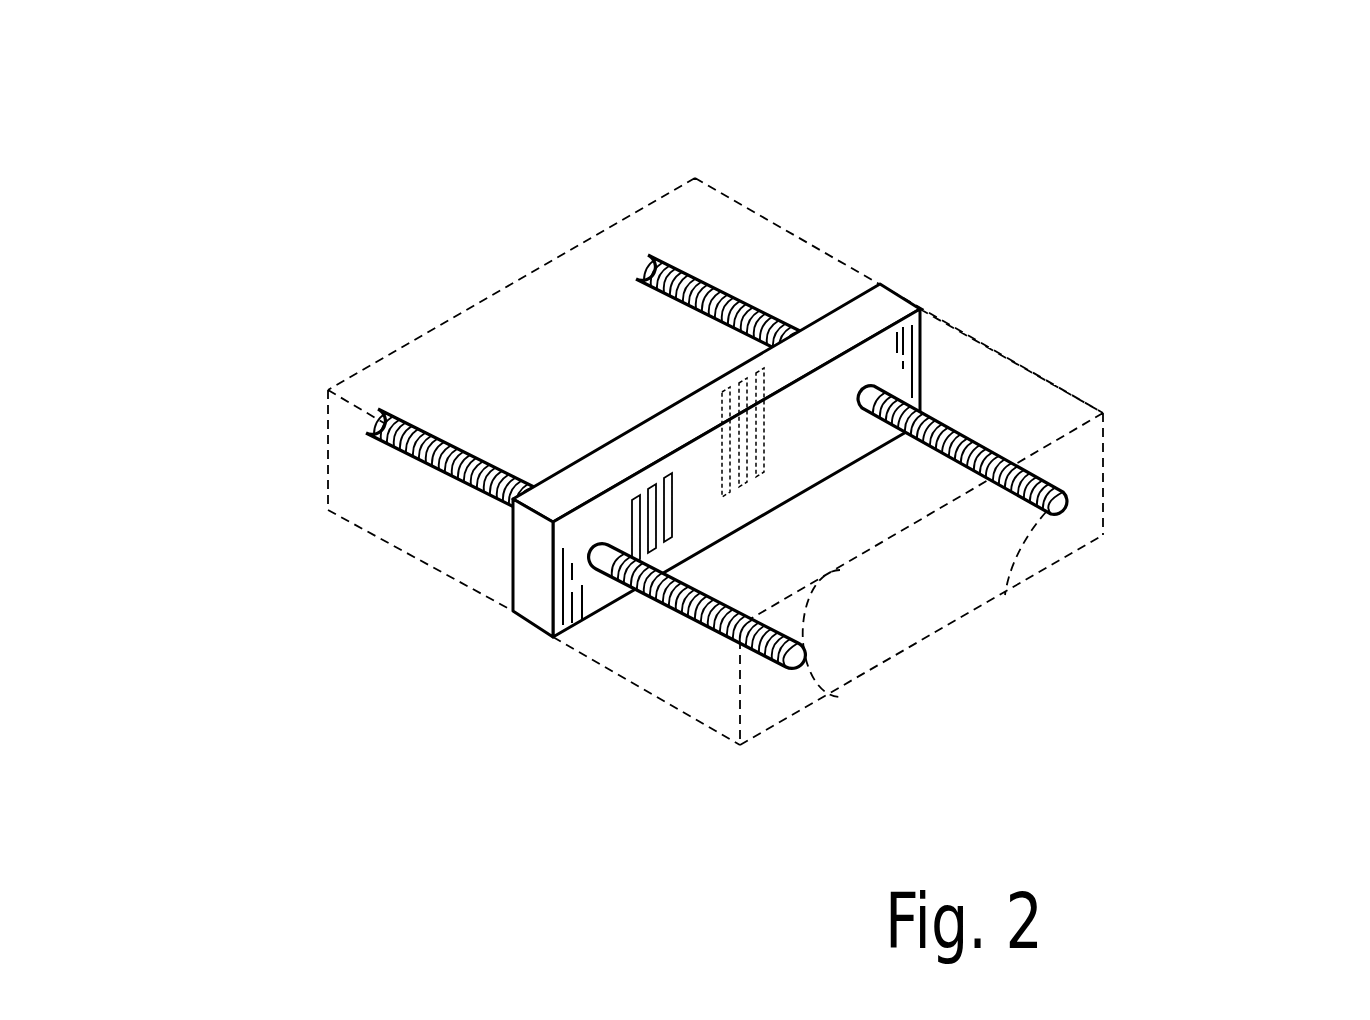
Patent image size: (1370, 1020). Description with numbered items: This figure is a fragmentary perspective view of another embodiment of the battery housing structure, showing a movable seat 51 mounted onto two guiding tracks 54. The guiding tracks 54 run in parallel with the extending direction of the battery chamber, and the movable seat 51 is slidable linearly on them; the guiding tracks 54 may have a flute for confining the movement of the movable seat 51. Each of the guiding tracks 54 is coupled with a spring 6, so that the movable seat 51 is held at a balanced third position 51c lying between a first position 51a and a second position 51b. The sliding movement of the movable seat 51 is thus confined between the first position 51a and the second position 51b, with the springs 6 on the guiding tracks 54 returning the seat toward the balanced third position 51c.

The movable seat 51 is at (589, 488).
The first position 51a is at (368, 450).
The second position 51b is at (758, 683).
The third position 51c is at (523, 645).
The spring 6 is at (990, 450).
The guiding tracks 54 is at (1063, 505).